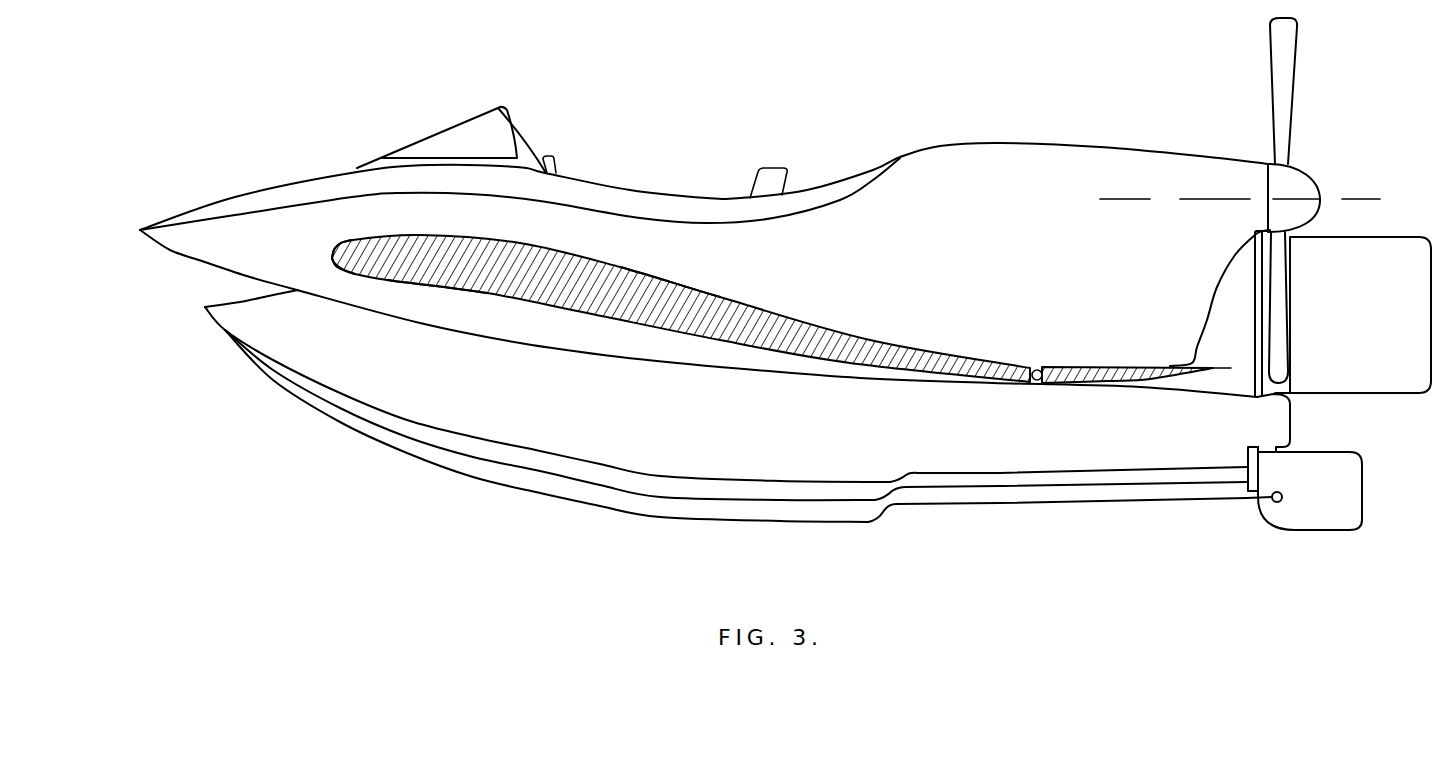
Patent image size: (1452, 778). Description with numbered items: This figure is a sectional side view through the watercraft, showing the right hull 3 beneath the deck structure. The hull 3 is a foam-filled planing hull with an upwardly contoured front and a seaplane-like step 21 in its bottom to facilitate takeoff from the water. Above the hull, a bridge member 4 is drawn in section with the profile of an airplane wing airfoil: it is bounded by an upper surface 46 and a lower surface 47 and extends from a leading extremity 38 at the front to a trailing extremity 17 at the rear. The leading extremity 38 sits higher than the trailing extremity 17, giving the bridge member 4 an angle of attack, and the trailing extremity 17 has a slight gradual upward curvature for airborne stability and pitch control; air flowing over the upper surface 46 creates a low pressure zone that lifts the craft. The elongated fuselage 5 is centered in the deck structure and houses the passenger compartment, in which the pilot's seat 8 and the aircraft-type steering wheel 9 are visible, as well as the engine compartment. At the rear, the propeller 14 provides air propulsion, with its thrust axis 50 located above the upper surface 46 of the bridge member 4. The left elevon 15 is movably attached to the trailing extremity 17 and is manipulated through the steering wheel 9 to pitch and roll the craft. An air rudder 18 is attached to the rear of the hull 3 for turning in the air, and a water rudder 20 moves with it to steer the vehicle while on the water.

The right hull 3 is at (455, 394).
The bridge member 4 is at (516, 279).
The fuselage 5 is at (805, 287).
The pilot's seat 8 is at (757, 170).
The steering wheel 9 is at (557, 158).
The propeller 14 is at (1297, 112).
The left elevon 15 is at (1125, 366).
The trailing extremity 17 is at (1027, 367).
The air rudder 18 is at (1378, 245).
The water rudder 20 is at (1360, 454).
The step 21 is at (887, 508).
The leading extremity 38 is at (333, 258).
The upper surface 46 is at (675, 280).
The lower surface 47 is at (470, 287).
The thrust axis 50 is at (1363, 199).